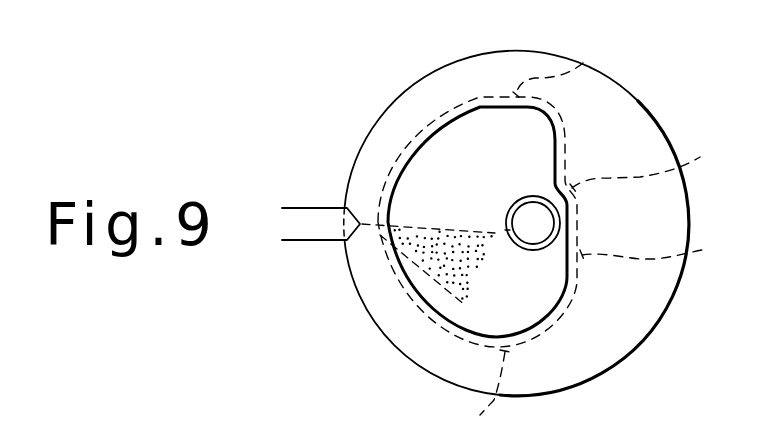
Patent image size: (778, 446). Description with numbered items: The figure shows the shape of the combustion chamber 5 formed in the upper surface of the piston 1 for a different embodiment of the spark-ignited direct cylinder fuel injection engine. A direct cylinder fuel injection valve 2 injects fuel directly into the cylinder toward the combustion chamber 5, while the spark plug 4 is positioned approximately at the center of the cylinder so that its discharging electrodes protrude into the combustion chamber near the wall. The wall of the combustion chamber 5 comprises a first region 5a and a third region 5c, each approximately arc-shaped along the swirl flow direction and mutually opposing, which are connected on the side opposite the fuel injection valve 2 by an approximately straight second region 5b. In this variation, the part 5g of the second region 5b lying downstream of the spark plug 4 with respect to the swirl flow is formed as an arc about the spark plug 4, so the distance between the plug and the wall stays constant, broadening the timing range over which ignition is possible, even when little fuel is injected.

The piston 1 is at (635, 302).
The direct cylinder fuel injection valve 2 is at (305, 208).
The spark plug 4 is at (541, 250).
The combustion chamber 5 is at (440, 147).
The first region of the wall surface 5a is at (476, 391).
The second region of the wall surface 5b is at (659, 250).
The third region of the wall surface 5c is at (585, 62).
The arc-shaped part of the second wall surface region 5g is at (654, 164).